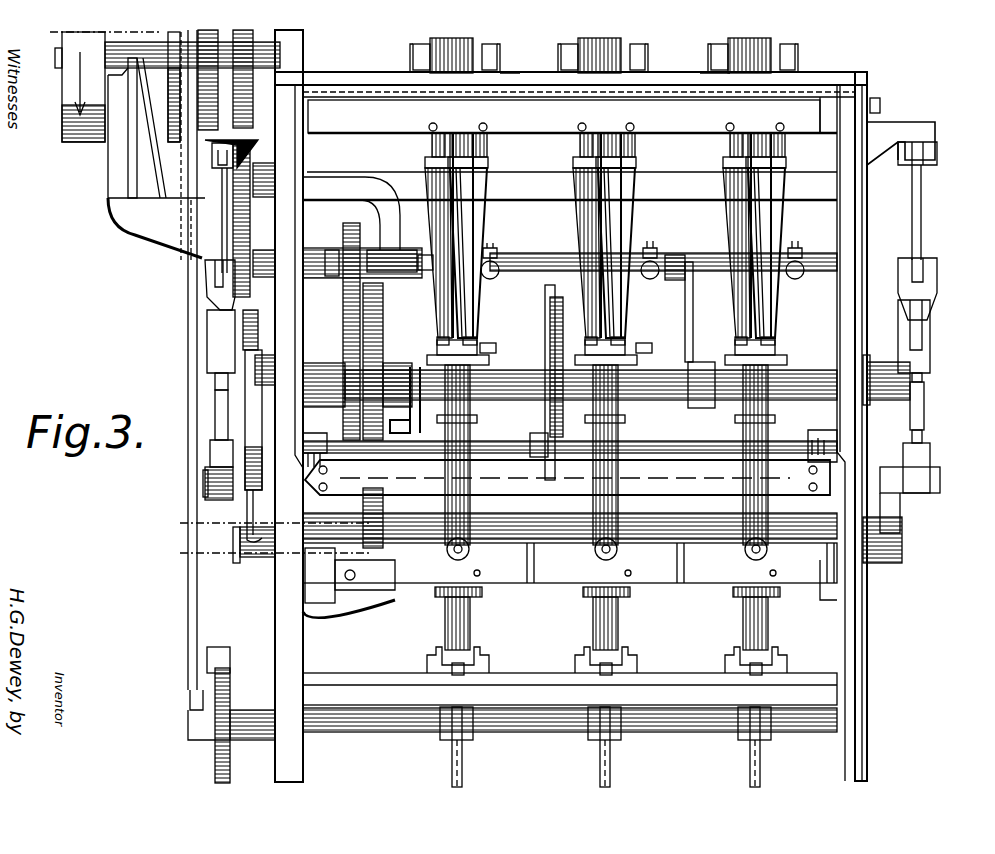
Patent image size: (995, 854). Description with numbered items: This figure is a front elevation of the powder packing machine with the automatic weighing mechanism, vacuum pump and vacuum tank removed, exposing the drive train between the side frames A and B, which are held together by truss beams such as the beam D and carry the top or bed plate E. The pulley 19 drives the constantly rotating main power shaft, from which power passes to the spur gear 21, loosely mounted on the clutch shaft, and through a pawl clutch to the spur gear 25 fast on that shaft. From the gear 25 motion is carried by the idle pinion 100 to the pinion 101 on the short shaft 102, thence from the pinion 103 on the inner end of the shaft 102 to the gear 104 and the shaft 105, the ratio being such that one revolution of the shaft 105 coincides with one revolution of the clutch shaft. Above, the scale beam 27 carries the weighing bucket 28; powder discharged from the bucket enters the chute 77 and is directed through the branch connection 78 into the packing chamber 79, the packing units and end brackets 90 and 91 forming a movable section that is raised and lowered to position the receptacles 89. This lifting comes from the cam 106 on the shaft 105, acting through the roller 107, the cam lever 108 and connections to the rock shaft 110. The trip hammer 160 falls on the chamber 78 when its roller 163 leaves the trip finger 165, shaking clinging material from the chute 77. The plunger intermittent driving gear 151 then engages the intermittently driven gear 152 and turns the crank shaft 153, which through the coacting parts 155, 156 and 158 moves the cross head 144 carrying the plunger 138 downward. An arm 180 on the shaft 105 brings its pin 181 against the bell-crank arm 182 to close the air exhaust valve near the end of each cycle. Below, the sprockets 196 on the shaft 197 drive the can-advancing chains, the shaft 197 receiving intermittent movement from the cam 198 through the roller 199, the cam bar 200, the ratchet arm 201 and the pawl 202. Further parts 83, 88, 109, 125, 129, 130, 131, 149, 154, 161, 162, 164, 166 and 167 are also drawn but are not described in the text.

The pulley 19 is at (78, 142).
The spur gear 21 is at (258, 78).
The spur gear 25 is at (218, 90).
The scale beam 27 is at (500, 42).
The weighing bucket 28 is at (505, 62).
The chute 77 is at (440, 205).
The branch connection 78 is at (460, 395).
The packing chamber 79 is at (470, 505).
The bar 83 is at (380, 600).
The bushing 88 is at (483, 592).
The receptacle 89 is at (475, 630).
The end bracket 90 is at (345, 605).
The end bracket 91 is at (825, 585).
The idle pinion 100 is at (205, 220).
The pinion 101 is at (230, 255).
The short shaft 102 is at (340, 265).
The pinion 103 is at (323, 287).
The gear 104 is at (352, 330).
The shaft 105 is at (656, 382).
The cam 106 is at (550, 300).
The roller 107 is at (548, 340).
The cam lever 108 is at (545, 410).
The bracket 109 is at (810, 450).
The rock shaft 110 is at (672, 455).
The bracket 125 is at (340, 565).
The clevis 129 is at (255, 408).
The gear 130 is at (245, 470).
The pin 131 is at (235, 465).
The plunger 138 is at (450, 152).
The cross head 144 is at (527, 120).
The bracket 149 is at (303, 125).
The plunger intermittent driving gear 151 is at (383, 312).
The intermittently driven gear 152 is at (385, 512).
The crank shaft 153 is at (233, 540).
The arm 154 is at (245, 508).
The coacting part 155 is at (215, 410).
The coacting part 156 is at (207, 305).
The coacting part 158 is at (205, 202).
The trip hammer 160 is at (495, 278).
The shaft 161 is at (548, 262).
The curved arm 162 is at (340, 190).
The roller 163 is at (652, 280).
The block 164 is at (698, 352).
The trip finger 165 is at (688, 288).
The stud 166 is at (490, 350).
The clip 167 is at (655, 240).
The arm 180 is at (412, 385).
The pin 181 is at (322, 424).
The bell-crank arm 182 is at (400, 470).
The sprocket 196 is at (454, 755).
The shaft 197 is at (540, 722).
The cam 198 is at (182, 72).
The roller 199 is at (152, 145).
The cam bar 200 is at (188, 570).
The ratchet arm 201 is at (210, 655).
The pawl 202 is at (222, 658).
The side frame A is at (290, 598).
The side frame B is at (852, 616).
The truss beam D is at (382, 690).
The top plate E is at (533, 190).